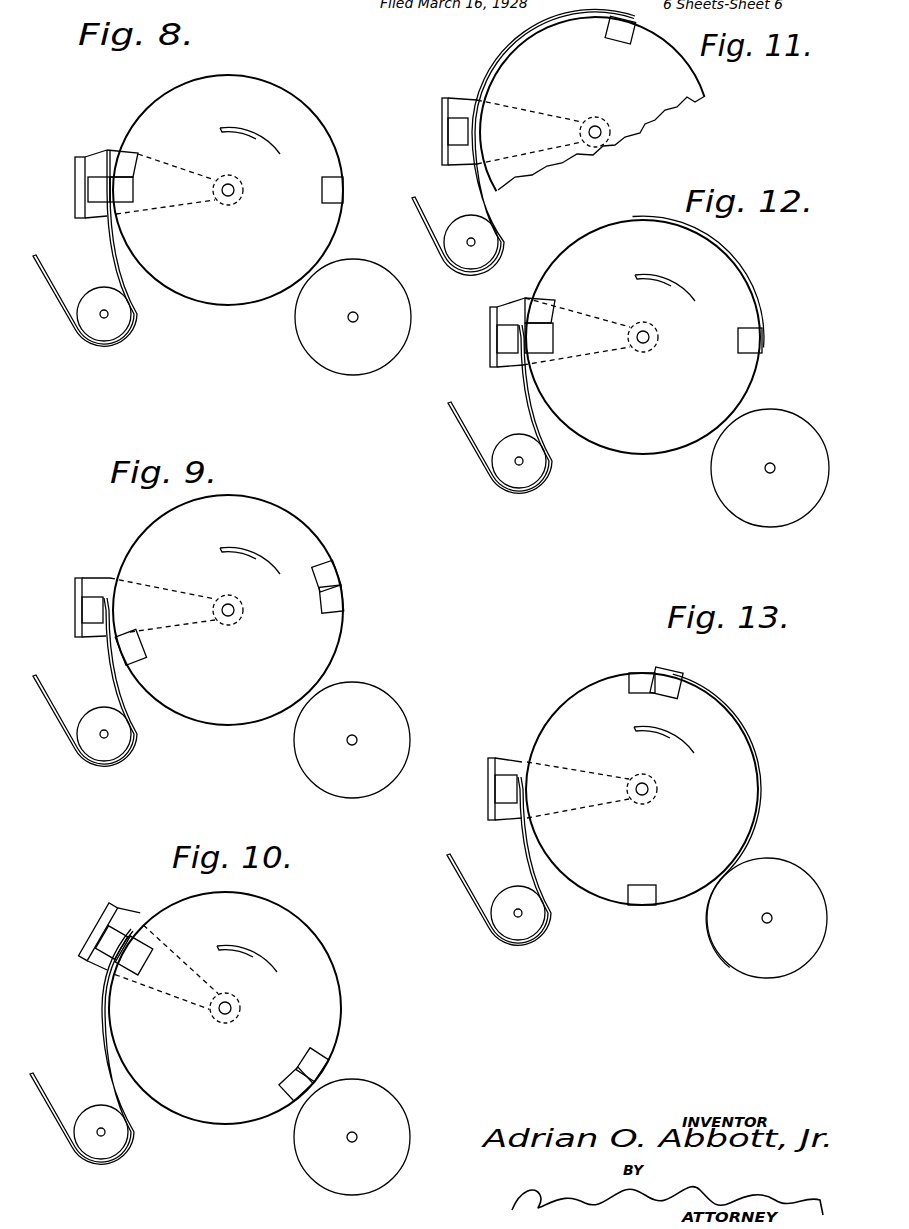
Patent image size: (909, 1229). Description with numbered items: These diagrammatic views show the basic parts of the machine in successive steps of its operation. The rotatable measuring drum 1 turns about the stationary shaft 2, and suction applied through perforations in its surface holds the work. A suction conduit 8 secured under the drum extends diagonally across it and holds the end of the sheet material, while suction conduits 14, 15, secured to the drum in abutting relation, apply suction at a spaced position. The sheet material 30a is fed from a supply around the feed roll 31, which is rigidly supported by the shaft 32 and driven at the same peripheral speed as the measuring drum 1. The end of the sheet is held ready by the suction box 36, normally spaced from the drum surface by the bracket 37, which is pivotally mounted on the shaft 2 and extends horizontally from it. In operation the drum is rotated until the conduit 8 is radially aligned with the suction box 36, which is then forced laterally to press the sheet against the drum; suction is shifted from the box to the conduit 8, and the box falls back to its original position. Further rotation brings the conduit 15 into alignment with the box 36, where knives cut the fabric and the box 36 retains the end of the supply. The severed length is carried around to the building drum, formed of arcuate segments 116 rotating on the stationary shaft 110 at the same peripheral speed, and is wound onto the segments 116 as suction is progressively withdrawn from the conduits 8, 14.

In FIG. 8, the measuring drum 1 is at (228, 182).
In FIG. 9, the measuring drum 1 is at (228, 605).
In FIG. 11, the measuring drum 1 is at (592, 101).
In FIG. 8, the stationary shaft 2 is at (240, 184).
In FIG. 9, the stationary shaft 2 is at (239, 604).
In FIG. 10, the stationary shaft 2 is at (237, 1006).
In FIG. 11, the stationary shaft 2 is at (604, 123).
In FIG. 12, the stationary shaft 2 is at (653, 331).
In FIG. 13, the stationary shaft 2 is at (661, 788).
In FIG. 8, the suction conduit 8 is at (343, 186).
In FIG. 9, the suction conduit 8 is at (144, 650).
In FIG. 10, the suction conduit 8 is at (149, 950).
In FIG. 11, the suction conduit 8 is at (619, 43).
In FIG. 12, the suction conduit 8 is at (732, 349).
In FIG. 13, the suction conduit 8 is at (642, 911).
In FIG. 8, the suction conduit 14 is at (138, 148).
In FIG. 9, the suction conduit 14 is at (349, 596).
In FIG. 10, the suction conduit 14 is at (281, 1078).
In FIG. 12, the suction conduit 14 is at (558, 299).
In FIG. 13, the suction conduit 14 is at (681, 672).
In FIG. 8, the suction conduit 15 is at (141, 189).
In FIG. 9, the suction conduit 15 is at (342, 566).
In FIG. 10, the suction conduit 15 is at (334, 1055).
In FIG. 12, the suction conduit 15 is at (559, 338).
In FIG. 13, the suction conduit 15 is at (635, 669).
In FIG. 8, the sheet material 30a is at (55, 296).
In FIG. 9, the sheet material 30a is at (54, 713).
In FIG. 10, the sheet material 30a is at (52, 1118).
In FIG. 11, the sheet material 30a is at (416, 226).
In FIG. 12, the sheet material 30a is at (460, 439).
In FIG. 13, the sheet material 30a is at (463, 891).
In FIG. 8, the feed roll 31 is at (104, 300).
In FIG. 9, the feed roll 31 is at (103, 720).
In FIG. 10, the feed roll 31 is at (94, 1122).
In FIG. 11, the feed roll 31 is at (471, 227).
In FIG. 12, the feed roll 31 is at (518, 447).
In FIG. 13, the feed roll 31 is at (515, 900).
In FIG. 8, the shaft 32 is at (106, 342).
In FIG. 9, the shaft 32 is at (91, 763).
In FIG. 10, the shaft 32 is at (133, 1126).
In FIG. 11, the shaft 32 is at (442, 257).
In FIG. 12, the shaft 32 is at (550, 469).
In FIG. 13, the shaft 32 is at (548, 925).
In FIG. 8, the suction box 36 is at (103, 160).
In FIG. 9, the suction box 36 is at (88, 634).
In FIG. 10, the suction box 36 is at (97, 963).
In FIG. 11, the suction box 36 is at (433, 119).
In FIG. 12, the suction box 36 is at (504, 361).
In FIG. 13, the suction box 36 is at (508, 764).
In FIG. 8, the bracket 37 is at (77, 168).
In FIG. 9, the bracket 37 is at (92, 591).
In FIG. 10, the bracket 37 is at (109, 926).
In FIG. 11, the bracket 37 is at (459, 115).
In FIG. 12, the bracket 37 is at (505, 322).
In FIG. 13, the bracket 37 is at (503, 805).
In FIG. 8, the stationary shaft 110 is at (354, 304).
In FIG. 9, the stationary shaft 110 is at (370, 750).
In FIG. 10, the stationary shaft 110 is at (352, 1122).
In FIG. 12, the stationary shaft 110 is at (793, 462).
In FIG. 13, the stationary shaft 110 is at (789, 930).
In FIG. 8, the arcuate segments 116 is at (374, 317).
In FIG. 9, the arcuate segments 116 is at (367, 740).
In FIG. 10, the arcuate segments 116 is at (369, 1135).
In FIG. 12, the arcuate segments 116 is at (772, 458).
In FIG. 13, the arcuate segments 116 is at (767, 909).